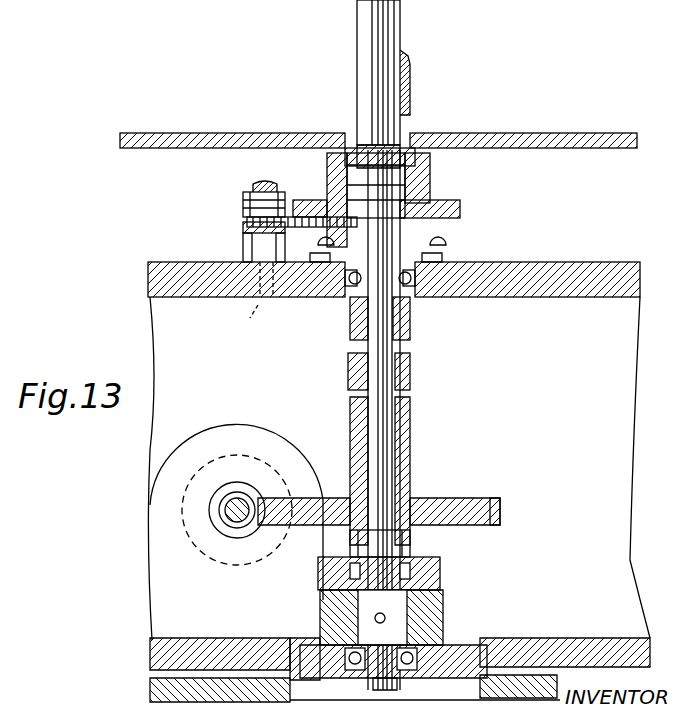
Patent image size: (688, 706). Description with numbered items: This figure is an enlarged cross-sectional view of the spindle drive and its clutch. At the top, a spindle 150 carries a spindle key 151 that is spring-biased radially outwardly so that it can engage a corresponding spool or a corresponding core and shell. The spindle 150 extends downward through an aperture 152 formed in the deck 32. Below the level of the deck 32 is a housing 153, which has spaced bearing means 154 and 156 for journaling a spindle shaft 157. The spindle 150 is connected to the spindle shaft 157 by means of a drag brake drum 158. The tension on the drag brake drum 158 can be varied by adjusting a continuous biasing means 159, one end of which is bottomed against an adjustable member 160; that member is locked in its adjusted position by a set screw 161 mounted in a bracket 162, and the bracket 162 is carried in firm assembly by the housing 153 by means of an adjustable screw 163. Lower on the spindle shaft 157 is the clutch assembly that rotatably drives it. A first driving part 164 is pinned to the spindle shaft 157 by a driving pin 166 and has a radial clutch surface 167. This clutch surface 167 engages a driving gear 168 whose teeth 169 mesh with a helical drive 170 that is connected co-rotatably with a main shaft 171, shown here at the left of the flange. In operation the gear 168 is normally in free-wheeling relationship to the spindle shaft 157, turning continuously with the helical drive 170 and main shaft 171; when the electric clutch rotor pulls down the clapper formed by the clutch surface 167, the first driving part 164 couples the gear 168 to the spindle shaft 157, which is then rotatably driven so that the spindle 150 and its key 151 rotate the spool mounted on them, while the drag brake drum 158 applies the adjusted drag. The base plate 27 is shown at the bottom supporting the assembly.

The spindle 150 is at (385, 27).
The spindle key 151 is at (408, 75).
The aperture 152 is at (405, 135).
The deck 32 is at (582, 112).
The drag brake drum 158 is at (428, 172).
The continuous biasing means 159 is at (305, 200).
The set screw 161 is at (258, 185).
The adjustable member 160 is at (243, 208).
The bracket 162 is at (245, 228).
The housing 153 is at (592, 240).
The adjustable screw 163 is at (242, 299).
The bearing means 154 is at (412, 278).
The spindle shaft 157 is at (385, 418).
The driving gear 168 is at (405, 492).
The teeth 169 is at (498, 503).
The helical drive 170 is at (232, 497).
The main shaft 171 is at (230, 520).
The radial clutch surface 167 is at (410, 560).
The first driving part 164 is at (440, 575).
The driving pin 166 is at (385, 618).
The bearing means 156 is at (420, 650).
The base plate 27 is at (530, 682).